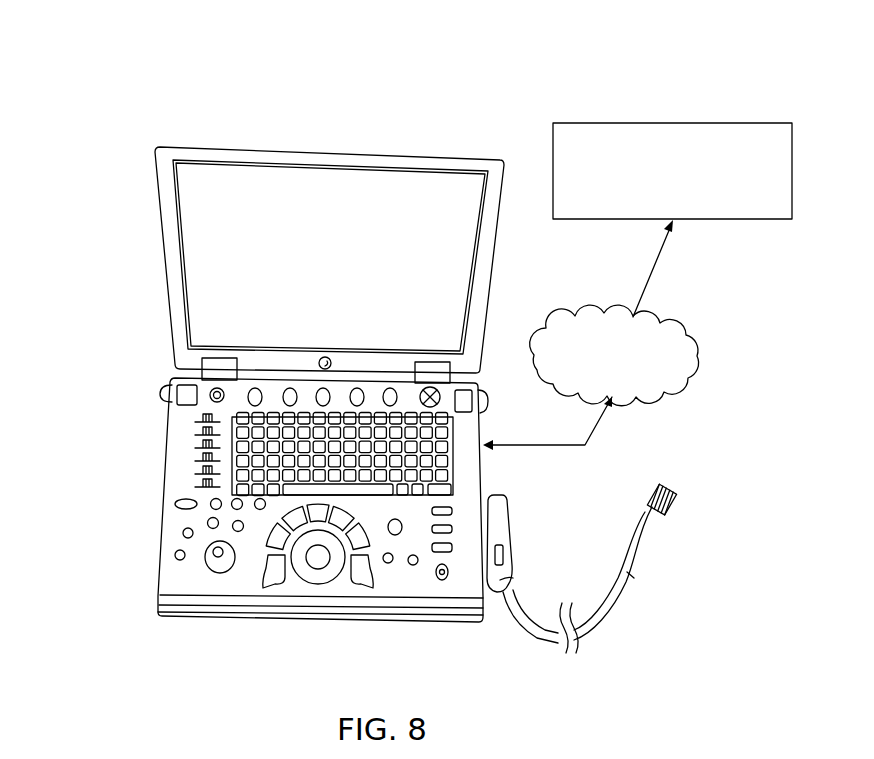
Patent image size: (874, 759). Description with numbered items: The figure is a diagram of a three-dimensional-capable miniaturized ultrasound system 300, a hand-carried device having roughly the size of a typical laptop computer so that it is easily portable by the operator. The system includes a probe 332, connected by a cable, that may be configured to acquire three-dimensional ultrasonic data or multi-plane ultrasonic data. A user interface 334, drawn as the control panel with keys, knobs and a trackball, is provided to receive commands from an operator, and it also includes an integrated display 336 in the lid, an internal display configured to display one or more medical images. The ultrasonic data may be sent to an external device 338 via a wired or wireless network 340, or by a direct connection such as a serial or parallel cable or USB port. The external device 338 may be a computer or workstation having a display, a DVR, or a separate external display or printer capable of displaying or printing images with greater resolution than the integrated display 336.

The miniaturized ultrasound system 300 is at (143, 93).
The probe 332 is at (585, 650).
The user interface 334 is at (145, 405).
The integrated display 336 is at (153, 365).
The external device 338 is at (683, 118).
The network 340 is at (578, 308).